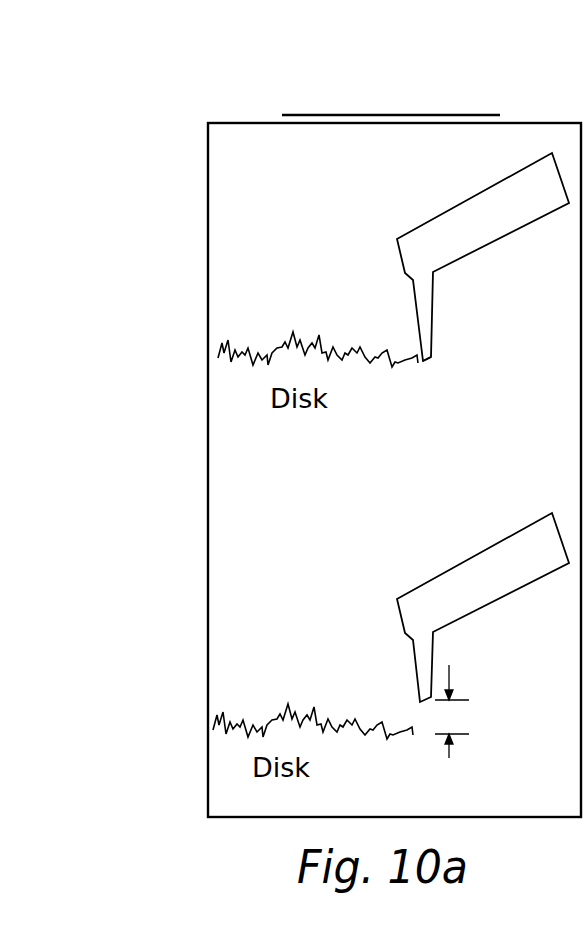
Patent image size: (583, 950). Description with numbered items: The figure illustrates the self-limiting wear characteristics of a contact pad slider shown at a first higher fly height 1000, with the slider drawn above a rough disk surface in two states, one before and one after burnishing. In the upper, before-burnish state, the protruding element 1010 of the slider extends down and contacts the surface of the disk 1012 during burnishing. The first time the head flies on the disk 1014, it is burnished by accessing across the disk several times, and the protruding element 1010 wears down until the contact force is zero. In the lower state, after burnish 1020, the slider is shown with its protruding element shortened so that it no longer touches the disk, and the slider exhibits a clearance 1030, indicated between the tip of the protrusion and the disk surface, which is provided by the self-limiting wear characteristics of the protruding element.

The first higher fly height 1000 is at (363, 62).
The protruding element 1010 is at (442, 315).
The disk 1012 is at (417, 372).
The disk 1014 is at (150, 203).
The after burnish 1020 is at (160, 572).
The clearance 1030 is at (465, 687).